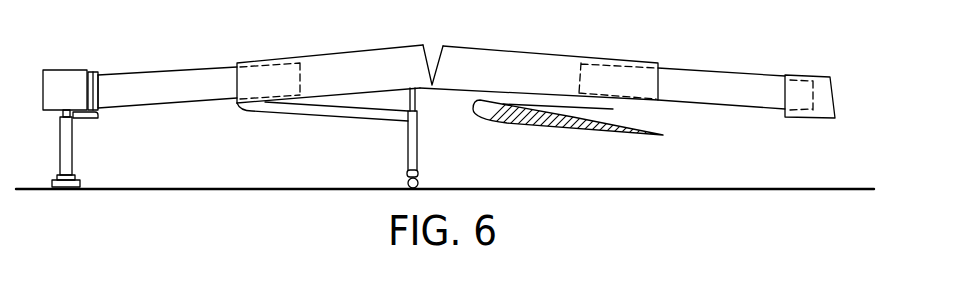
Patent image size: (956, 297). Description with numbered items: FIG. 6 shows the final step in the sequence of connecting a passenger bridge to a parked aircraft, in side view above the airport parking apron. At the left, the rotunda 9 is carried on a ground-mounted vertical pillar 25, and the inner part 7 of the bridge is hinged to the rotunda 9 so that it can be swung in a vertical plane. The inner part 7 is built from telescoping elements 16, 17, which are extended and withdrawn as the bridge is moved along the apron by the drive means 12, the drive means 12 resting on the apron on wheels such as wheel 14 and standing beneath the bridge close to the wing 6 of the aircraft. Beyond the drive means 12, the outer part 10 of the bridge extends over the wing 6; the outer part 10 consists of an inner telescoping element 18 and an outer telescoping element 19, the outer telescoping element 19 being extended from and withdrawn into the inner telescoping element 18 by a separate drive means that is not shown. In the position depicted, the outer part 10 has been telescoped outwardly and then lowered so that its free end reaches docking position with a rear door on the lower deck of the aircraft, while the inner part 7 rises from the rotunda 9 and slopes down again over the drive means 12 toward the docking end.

The wing 6 is at (522, 122).
The inner part 7 is at (105, 92).
The rotunda 9 is at (65, 75).
The outer part 10 is at (677, 77).
The drive means 12 is at (410, 147).
The wheel 14 is at (408, 185).
The telescoping element 16 is at (182, 82).
The telescoping element 17 is at (312, 58).
The inner telescoping element 18 is at (502, 60).
The outer telescoping element 19 is at (752, 83).
The vertical pillar 25 is at (68, 150).